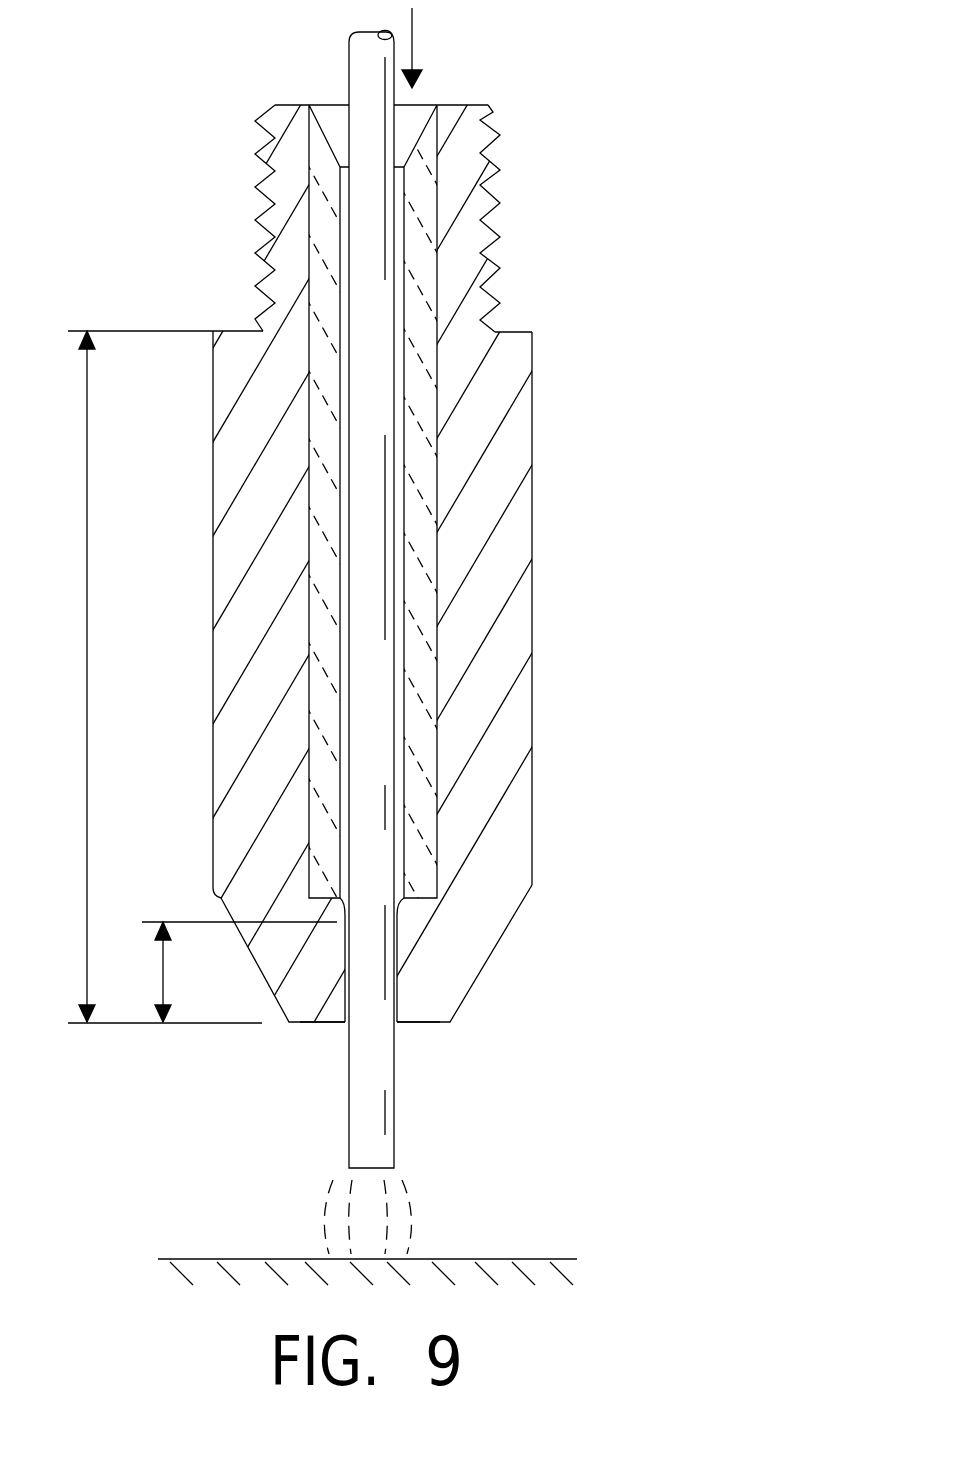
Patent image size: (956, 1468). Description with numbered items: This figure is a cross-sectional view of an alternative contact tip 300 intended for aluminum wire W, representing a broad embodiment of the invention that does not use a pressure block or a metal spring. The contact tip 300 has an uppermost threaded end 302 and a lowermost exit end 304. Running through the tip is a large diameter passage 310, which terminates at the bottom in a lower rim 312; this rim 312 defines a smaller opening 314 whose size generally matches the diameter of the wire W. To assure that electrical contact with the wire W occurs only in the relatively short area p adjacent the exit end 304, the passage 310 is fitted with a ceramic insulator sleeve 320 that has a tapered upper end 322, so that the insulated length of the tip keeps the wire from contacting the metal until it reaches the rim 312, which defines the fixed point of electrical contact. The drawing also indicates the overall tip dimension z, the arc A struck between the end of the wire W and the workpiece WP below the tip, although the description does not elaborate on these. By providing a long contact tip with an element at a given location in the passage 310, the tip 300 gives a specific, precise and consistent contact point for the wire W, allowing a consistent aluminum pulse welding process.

The contact tip 300 is at (556, 342).
The threaded end 302 is at (491, 223).
The exit end 304 is at (453, 1002).
The passage 310 is at (437, 517).
The rim 312 is at (403, 925).
The opening 314 is at (347, 995).
The ceramic insulator sleeve 320 is at (450, 270).
The tapered upper end 322 is at (421, 134).
The wire W is at (383, 1135).
The arc A is at (408, 1195).
The workpiece WP is at (523, 1258).
The contact tip length z is at (165, 677).
The contact area p is at (239, 972).